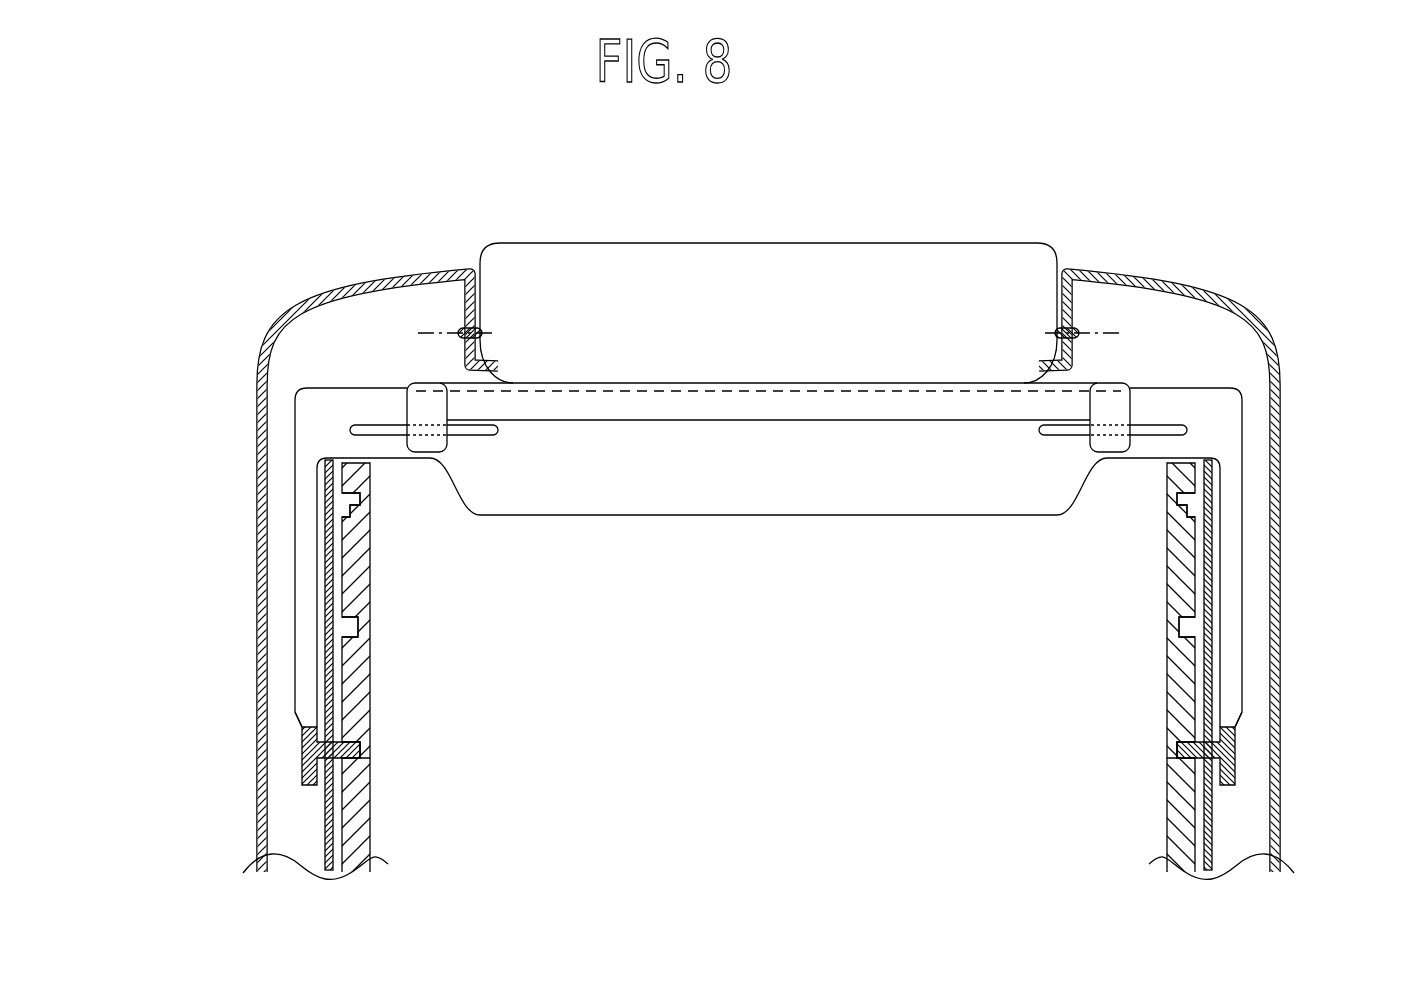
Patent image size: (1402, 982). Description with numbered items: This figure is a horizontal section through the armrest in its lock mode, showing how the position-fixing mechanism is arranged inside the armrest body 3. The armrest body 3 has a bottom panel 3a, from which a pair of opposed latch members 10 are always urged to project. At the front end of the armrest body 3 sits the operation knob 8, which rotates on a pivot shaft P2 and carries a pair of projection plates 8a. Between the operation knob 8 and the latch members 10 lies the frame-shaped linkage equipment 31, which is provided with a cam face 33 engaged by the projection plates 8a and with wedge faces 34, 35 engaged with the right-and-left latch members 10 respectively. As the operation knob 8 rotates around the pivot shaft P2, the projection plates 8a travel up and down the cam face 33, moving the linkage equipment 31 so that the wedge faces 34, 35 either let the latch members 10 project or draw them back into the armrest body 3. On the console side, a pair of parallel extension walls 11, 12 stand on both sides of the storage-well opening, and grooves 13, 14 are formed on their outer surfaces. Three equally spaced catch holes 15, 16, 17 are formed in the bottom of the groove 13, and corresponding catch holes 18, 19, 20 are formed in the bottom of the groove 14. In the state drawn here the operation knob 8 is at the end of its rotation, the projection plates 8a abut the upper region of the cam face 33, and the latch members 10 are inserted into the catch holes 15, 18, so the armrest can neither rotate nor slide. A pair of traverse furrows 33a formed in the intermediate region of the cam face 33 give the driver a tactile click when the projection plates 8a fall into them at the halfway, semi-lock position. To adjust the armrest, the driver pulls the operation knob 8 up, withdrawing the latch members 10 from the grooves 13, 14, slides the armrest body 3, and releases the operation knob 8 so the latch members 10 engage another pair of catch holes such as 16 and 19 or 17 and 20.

The armrest body 3 is at (320, 294).
The bottom panel 3a is at (322, 518).
The operation knob 8 is at (790, 252).
The projection plates 8a is at (420, 441).
The latch members 10 is at (302, 748).
The extension wall 11 is at (350, 823).
The extension wall 12 is at (1187, 828).
The groove 13 is at (341, 590).
The groove 14 is at (1197, 584).
The catch hole 15 is at (362, 747).
The catch hole 16 is at (357, 628).
The catch hole 17 is at (360, 503).
The catch hole 18 is at (1175, 750).
The catch hole 19 is at (1180, 630).
The catch hole 20 is at (1178, 508).
The linkage equipment 31 is at (1012, 462).
The cam face 33 is at (800, 484).
The traverse furrows 33a is at (482, 430).
The wedge face 34 is at (295, 717).
The wedge face 35 is at (1242, 713).
The pivot shaft P2 is at (428, 331).